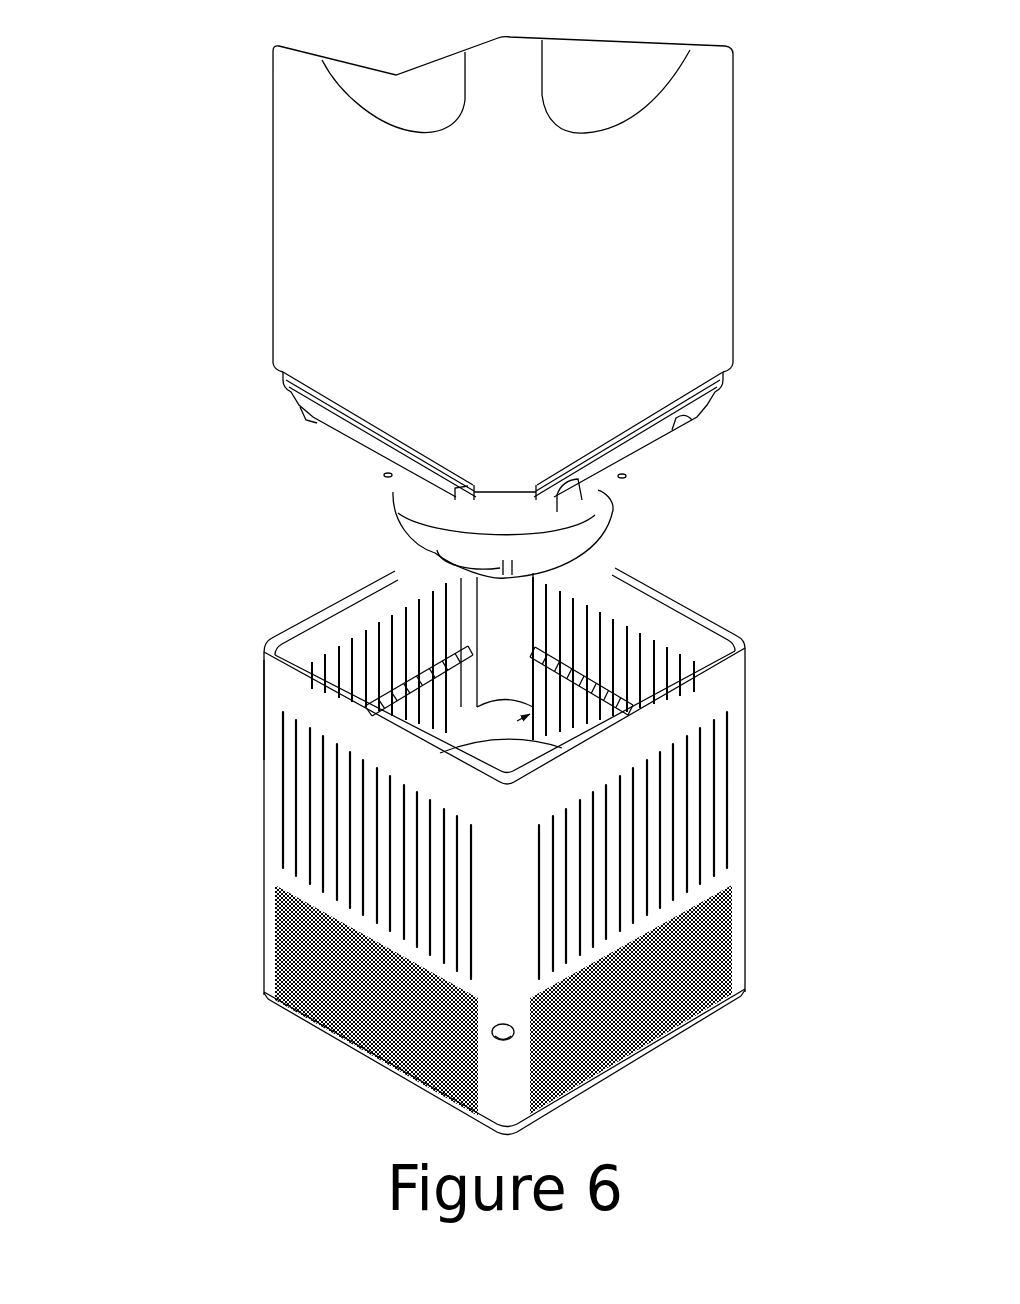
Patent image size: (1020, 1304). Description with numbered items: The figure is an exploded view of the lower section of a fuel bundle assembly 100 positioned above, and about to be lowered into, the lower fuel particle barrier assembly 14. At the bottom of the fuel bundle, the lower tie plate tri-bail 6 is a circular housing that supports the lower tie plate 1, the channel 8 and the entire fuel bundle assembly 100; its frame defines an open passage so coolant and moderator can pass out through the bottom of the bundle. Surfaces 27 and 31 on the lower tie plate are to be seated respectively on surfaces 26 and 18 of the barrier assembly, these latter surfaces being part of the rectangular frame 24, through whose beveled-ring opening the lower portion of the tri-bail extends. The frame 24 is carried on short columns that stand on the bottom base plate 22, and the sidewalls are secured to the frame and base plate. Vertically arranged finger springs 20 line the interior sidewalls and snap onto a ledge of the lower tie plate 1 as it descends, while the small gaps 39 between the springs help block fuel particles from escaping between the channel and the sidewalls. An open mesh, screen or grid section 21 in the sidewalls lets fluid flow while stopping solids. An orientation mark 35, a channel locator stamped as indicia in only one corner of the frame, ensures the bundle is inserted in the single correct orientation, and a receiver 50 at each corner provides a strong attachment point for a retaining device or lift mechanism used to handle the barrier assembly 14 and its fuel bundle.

The fuel bundle assembly 100 is at (170, 118).
The channel 8 is at (268, 205).
The surface 31 is at (507, 517).
The lower tie plate tri-bail 6 is at (638, 460).
The surface 27 is at (457, 502).
The lower tie plate 1 is at (593, 520).
The lower fuel particle barrier assembly 14 is at (242, 887).
The gaps 39 is at (323, 737).
The finger springs 20 is at (317, 812).
The surface 18 is at (447, 733).
The orientation mark 35 is at (562, 737).
The surface 26 is at (490, 757).
The rectangular frame 24 is at (497, 760).
The open mesh, screen or grid section 21 is at (693, 973).
The bottom base plate 22 is at (303, 1028).
The receiver 50 is at (508, 1036).